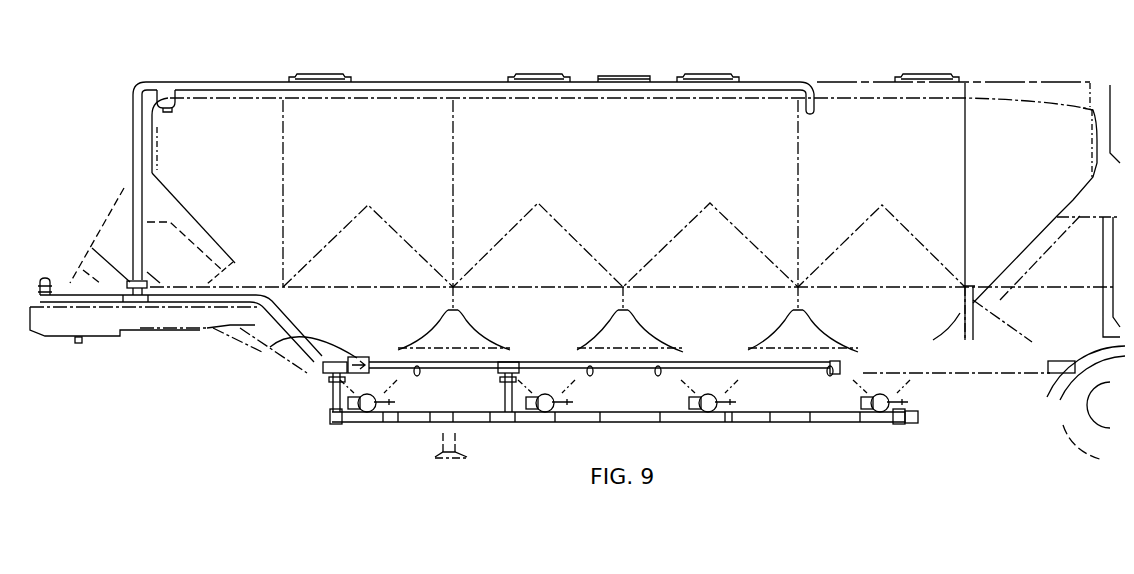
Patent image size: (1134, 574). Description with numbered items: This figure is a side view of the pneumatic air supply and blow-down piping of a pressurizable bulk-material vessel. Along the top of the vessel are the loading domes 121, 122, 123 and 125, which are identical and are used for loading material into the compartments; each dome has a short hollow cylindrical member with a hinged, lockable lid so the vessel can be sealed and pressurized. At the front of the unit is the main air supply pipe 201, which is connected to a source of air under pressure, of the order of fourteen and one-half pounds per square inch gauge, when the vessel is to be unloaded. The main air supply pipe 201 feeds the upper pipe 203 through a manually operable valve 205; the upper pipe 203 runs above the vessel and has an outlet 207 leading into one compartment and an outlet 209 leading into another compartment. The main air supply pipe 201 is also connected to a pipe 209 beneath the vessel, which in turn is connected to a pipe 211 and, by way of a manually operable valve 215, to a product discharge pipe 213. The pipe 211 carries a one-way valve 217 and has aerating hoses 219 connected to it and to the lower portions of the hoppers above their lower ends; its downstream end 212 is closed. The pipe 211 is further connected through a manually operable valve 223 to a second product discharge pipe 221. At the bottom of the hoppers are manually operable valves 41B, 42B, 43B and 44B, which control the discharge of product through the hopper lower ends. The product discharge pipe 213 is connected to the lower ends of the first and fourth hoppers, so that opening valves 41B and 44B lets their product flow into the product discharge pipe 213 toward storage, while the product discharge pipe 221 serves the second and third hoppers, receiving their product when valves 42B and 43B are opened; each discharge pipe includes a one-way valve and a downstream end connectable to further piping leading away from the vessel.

The loading dome 121 is at (316, 75).
The loading dome 122 is at (542, 75).
The loading dome 123 is at (700, 75).
The loading dome 125 is at (927, 75).
The main air supply pipe 201 is at (60, 287).
The upper pipe 203 is at (133, 118).
The manually operable valve 205 is at (92, 248).
The outlet 207 is at (173, 100).
The outlet / pipe 209 is at (818, 97).
The pipe 211 is at (440, 369).
The downstream end 212 is at (832, 366).
The product discharge pipe 213 is at (332, 400).
The manually operable valve 215 is at (327, 380).
The one-way valve 217 is at (272, 346).
The aerating hoses 219 is at (417, 376).
The product discharge pipe 221 is at (505, 414).
The manually operable valve 223 is at (507, 378).
The manually operable valve 41B is at (361, 412).
The manually operable valve 42B is at (541, 416).
The manually operable valve 43B is at (698, 413).
The manually operable valve 44B is at (882, 413).